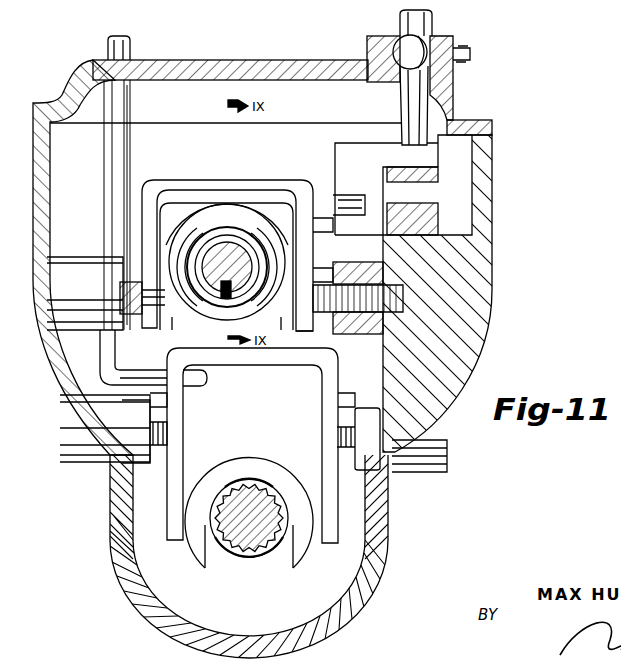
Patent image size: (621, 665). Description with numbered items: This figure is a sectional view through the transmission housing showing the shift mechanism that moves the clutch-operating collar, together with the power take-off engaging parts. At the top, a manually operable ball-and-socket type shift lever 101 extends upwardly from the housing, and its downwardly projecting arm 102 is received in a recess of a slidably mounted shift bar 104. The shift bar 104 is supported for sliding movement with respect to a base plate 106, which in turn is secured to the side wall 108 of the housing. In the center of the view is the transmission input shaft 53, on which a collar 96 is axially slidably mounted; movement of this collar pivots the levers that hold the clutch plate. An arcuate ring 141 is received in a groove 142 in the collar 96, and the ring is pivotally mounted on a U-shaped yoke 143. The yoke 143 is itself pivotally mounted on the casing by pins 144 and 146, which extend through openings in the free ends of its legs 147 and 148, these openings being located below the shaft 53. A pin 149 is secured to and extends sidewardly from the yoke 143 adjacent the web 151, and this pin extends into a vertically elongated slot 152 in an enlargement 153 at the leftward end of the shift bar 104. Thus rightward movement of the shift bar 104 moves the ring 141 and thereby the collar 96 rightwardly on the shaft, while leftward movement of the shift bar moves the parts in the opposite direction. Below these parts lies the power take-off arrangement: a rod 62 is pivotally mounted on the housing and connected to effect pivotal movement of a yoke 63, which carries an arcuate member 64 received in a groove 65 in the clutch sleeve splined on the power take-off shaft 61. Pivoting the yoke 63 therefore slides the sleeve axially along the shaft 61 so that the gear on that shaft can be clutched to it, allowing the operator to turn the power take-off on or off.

The transmission input shaft 53 is at (255, 240).
The power take-off shaft 61 is at (258, 538).
The rod 62 is at (110, 153).
The yoke 63 is at (230, 350).
The arcuate member 64 is at (262, 457).
The groove 65 is at (230, 575).
The collar 96 is at (240, 298).
The shift lever 101 is at (438, 24).
The arm 102 is at (406, 100).
The shift bar 104 is at (435, 158).
The base plate 106 is at (440, 222).
The side wall 108 is at (470, 287).
The arcuate ring 141 is at (196, 232).
The groove 142 is at (150, 292).
The U-shaped yoke 143 is at (156, 178).
The pin 144 is at (178, 318).
The pin 146 is at (283, 320).
The leg 147 is at (152, 325).
The leg 148 is at (306, 320).
The pin 149 is at (318, 198).
The web 151 is at (228, 350).
The slot 152 is at (340, 236).
The enlargement 153 is at (333, 150).